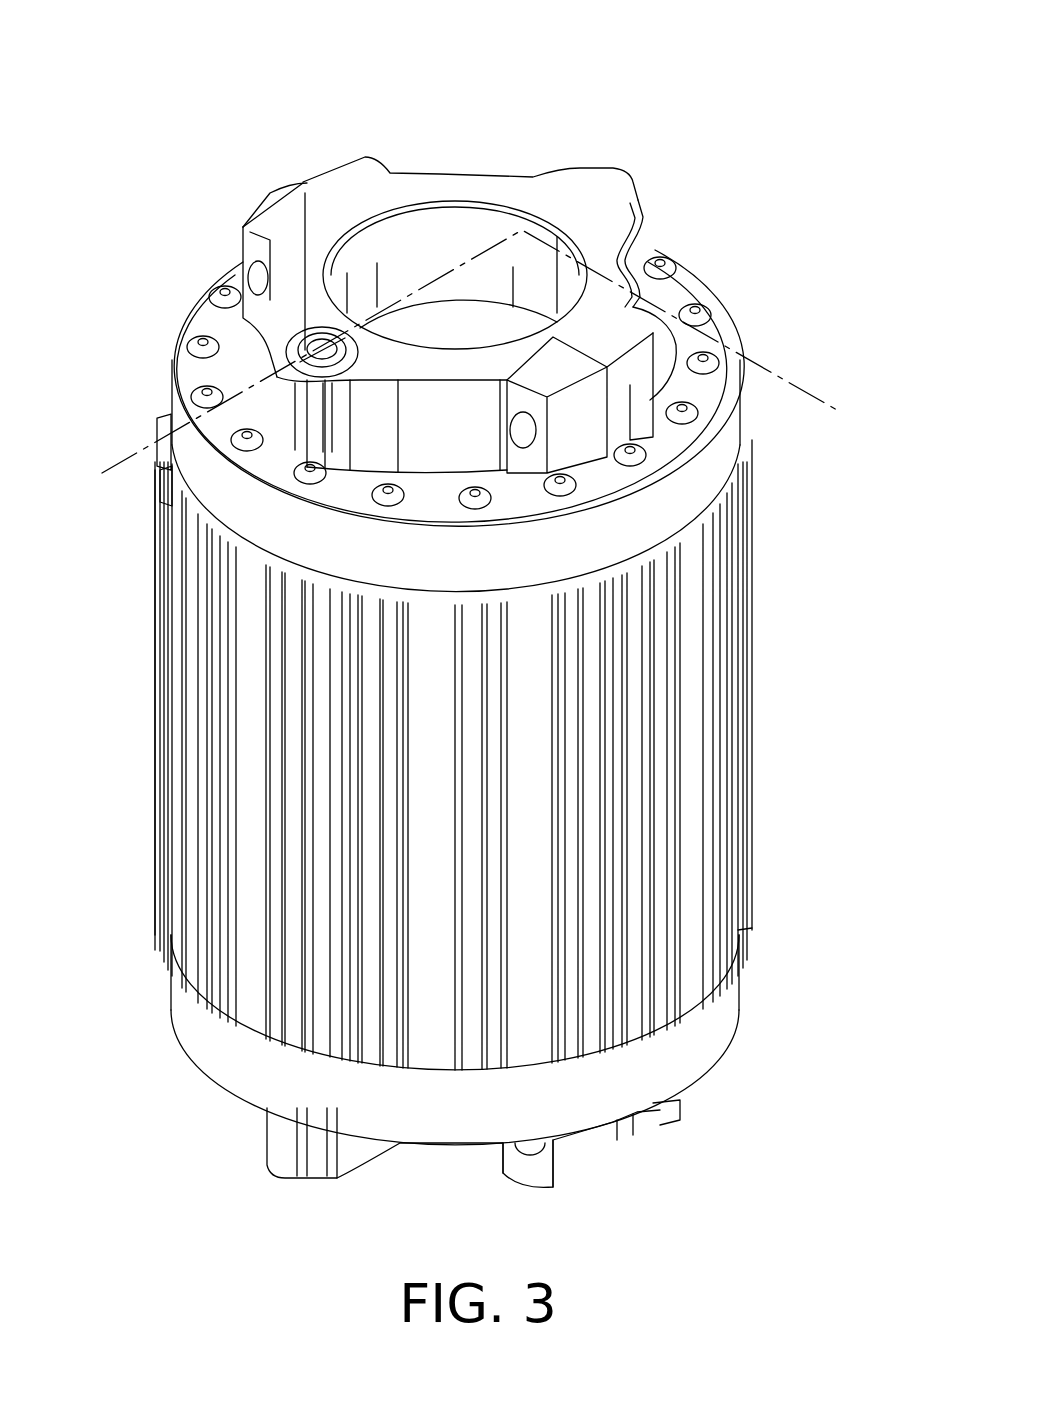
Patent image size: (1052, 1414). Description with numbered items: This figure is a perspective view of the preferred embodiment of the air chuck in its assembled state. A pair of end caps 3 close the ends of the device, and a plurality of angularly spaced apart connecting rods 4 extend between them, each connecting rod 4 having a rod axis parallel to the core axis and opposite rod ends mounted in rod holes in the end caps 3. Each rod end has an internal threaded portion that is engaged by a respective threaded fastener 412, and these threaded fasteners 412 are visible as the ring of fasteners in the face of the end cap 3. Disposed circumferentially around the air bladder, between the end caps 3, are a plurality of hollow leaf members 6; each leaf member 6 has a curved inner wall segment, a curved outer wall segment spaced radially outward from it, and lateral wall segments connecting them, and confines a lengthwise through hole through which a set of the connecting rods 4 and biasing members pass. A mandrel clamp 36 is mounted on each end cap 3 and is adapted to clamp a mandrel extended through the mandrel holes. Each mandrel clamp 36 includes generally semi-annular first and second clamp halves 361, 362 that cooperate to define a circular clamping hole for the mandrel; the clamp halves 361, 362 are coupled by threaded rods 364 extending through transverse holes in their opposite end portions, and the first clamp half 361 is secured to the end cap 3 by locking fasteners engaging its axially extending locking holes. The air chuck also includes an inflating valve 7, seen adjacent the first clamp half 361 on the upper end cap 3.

The end cap 3 is at (193, 298).
The connecting rod 4 is at (145, 488).
The hollow leaf member 6 is at (757, 718).
The inflating valve 7 is at (308, 327).
The mandrel clamp 36 is at (536, 602).
The first clamp half 361 is at (265, 218).
The second clamp half 362 is at (372, 178).
The threaded rod 364 is at (668, 367).
The threaded fastener 412 is at (672, 263).